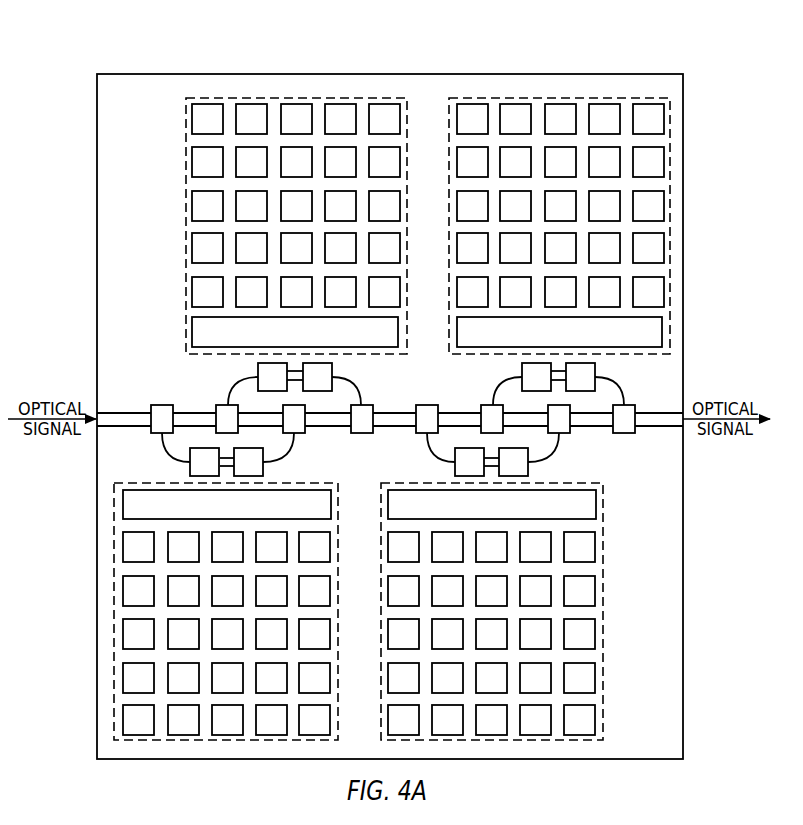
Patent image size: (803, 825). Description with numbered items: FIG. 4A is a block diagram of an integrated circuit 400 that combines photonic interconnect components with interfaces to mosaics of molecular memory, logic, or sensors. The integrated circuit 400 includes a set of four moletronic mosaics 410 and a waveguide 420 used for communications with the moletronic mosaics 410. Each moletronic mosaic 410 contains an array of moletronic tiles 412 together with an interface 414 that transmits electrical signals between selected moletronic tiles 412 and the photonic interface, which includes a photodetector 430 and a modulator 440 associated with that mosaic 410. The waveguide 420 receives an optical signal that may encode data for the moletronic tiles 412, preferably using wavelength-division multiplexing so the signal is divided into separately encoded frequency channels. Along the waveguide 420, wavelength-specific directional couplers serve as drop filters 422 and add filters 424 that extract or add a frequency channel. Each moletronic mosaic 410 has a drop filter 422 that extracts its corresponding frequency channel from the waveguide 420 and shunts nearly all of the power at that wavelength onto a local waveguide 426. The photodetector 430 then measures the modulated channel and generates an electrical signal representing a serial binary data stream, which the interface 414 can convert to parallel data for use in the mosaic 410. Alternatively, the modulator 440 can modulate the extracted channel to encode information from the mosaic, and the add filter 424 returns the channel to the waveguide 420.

The integrated circuit 400 is at (390, 416).
The moletronic mosaic 410 is at (187, 133).
The moletronic tile 412 is at (200, 290).
The interface 414 is at (392, 418).
The waveguide 420 is at (110, 412).
The drop filter 422 is at (227, 410).
The add filter 424 is at (366, 404).
The local waveguide 426 is at (242, 396).
The photodetector 430 is at (256, 374).
The modulator 440 is at (336, 374).